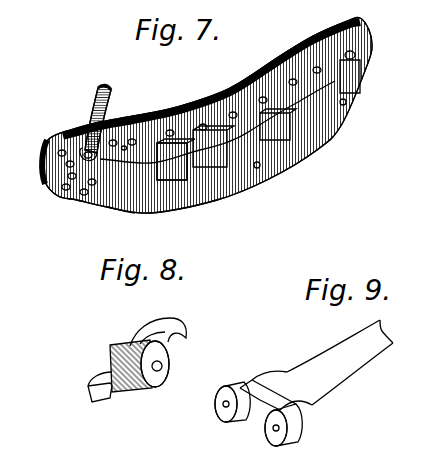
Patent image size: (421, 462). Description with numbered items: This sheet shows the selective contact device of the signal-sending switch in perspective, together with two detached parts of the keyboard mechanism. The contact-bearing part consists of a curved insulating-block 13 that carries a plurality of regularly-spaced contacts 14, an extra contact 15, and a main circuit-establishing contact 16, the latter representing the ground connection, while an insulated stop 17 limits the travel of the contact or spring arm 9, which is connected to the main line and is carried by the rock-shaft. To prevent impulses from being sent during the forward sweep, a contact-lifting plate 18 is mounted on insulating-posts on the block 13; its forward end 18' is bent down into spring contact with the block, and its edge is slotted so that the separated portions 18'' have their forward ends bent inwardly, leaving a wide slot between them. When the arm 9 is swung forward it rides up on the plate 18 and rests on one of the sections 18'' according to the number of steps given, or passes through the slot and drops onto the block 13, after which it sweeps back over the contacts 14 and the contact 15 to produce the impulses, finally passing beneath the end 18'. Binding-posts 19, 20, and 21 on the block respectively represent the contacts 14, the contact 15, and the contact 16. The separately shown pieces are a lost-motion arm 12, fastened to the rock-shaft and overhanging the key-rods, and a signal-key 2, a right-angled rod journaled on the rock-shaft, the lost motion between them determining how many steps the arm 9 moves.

In FIG. 9, the signal-key 2 is at (340, 372).
In FIG. 7, the contact or spring arm 9 is at (103, 87).
In FIG. 8, the lost-motion arm 12 is at (128, 342).
In FIG. 7, the insulating-block 13 is at (255, 80).
In FIG. 7, the regularly-spaced contacts 14 is at (166, 126).
In FIG. 7, the extra contact 15 is at (128, 132).
In FIG. 7, the main circuit-establishing contact 16 is at (86, 126).
In FIG. 7, the insulated stop 17 is at (66, 129).
In FIG. 7, the plate 18 is at (258, 137).
In FIG. 7, the forward end of the plate 18' is at (121, 223).
In FIG. 7, the slotted portions of the plate 18'' is at (191, 185).
In FIG. 7, the binding-post 19 is at (64, 198).
In FIG. 7, the binding-post 20 is at (83, 208).
In FIG. 7, the binding-post 21 is at (62, 193).